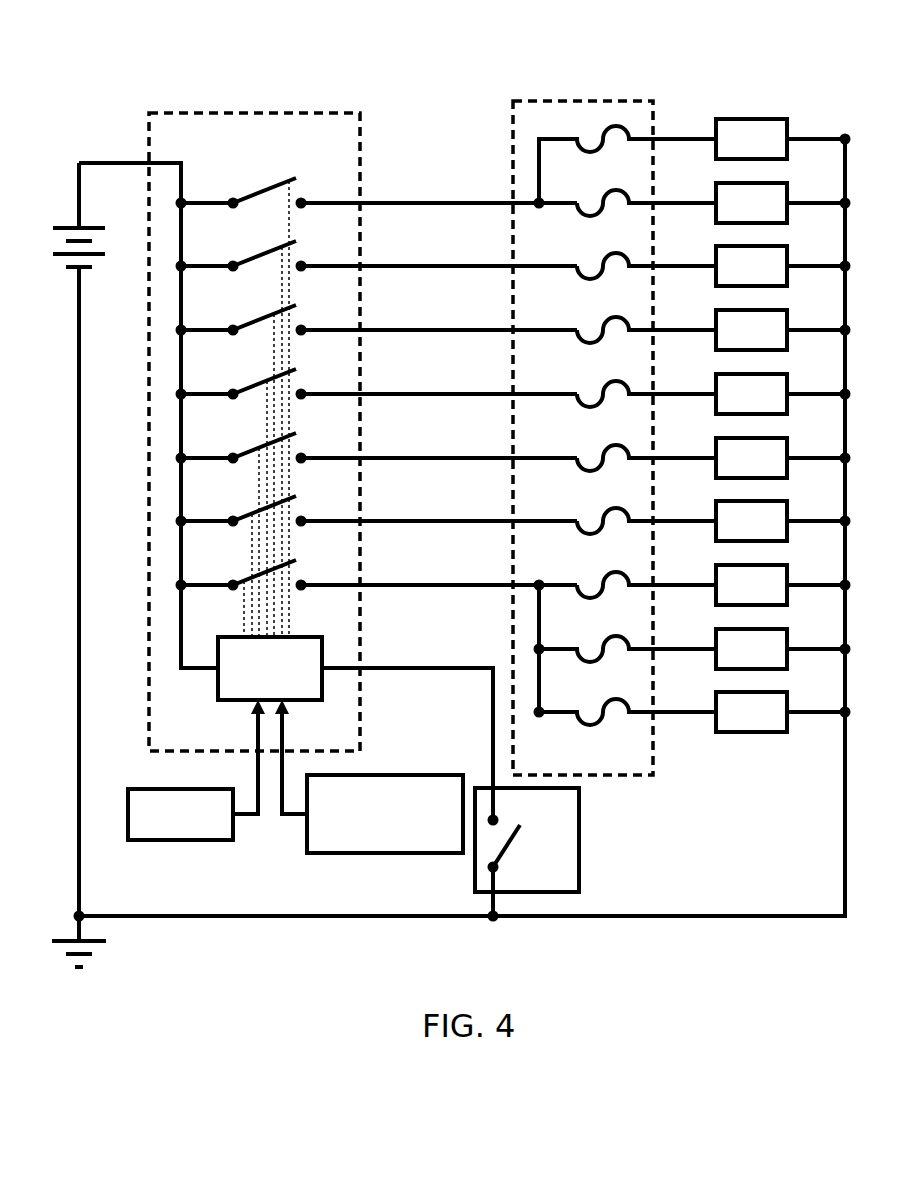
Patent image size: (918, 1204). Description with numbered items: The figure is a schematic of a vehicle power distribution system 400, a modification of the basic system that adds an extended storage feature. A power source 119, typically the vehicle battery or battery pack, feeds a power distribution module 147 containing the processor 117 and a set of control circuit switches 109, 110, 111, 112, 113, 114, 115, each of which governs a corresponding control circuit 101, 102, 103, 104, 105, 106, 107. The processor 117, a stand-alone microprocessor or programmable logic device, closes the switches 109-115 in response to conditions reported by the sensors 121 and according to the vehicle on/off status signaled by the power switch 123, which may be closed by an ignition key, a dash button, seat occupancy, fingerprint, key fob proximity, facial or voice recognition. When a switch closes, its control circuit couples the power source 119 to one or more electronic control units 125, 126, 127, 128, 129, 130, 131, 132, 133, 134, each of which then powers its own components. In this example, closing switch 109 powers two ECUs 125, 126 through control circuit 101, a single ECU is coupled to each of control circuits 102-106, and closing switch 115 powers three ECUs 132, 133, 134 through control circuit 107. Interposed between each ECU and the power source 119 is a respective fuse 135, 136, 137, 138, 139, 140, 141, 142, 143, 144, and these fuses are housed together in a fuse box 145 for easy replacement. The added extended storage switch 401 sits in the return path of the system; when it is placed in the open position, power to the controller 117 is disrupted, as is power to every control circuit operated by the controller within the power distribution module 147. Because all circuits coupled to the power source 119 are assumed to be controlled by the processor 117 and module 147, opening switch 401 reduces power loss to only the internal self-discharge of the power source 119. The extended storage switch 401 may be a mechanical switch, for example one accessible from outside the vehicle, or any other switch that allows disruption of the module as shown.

The vehicle power distribution system with extended storage feature 400 is at (0, 0).
The control circuit 101 is at (439, 187).
The control circuit 102 is at (439, 250).
The control circuit 103 is at (439, 314).
The control circuit 104 is at (439, 378).
The control circuit 105 is at (439, 442).
The control circuit 106 is at (439, 505).
The control circuit 107 is at (439, 569).
The control circuit switch 109 is at (280, 184).
The control circuit switch 110 is at (273, 250).
The control circuit switch 111 is at (265, 317).
The control circuit switch 112 is at (255, 385).
The control circuit switch 113 is at (247, 453).
The control circuit switch 114 is at (249, 515).
The control circuit switch 115 is at (249, 579).
The processor 117 is at (242, 703).
The power source 119 is at (58, 539).
The sensors 121 is at (181, 843).
The power switch 123 is at (360, 855).
The electronic control unit 125 is at (766, 120).
The electronic control unit 126 is at (766, 184).
The electronic control unit 127 is at (766, 247).
The electronic control unit 128 is at (766, 311).
The electronic control unit 129 is at (766, 375).
The electronic control unit 130 is at (766, 439).
The electronic control unit 131 is at (766, 502).
The electronic control unit 132 is at (766, 566).
The electronic control unit 133 is at (766, 630).
The electronic control unit 134 is at (766, 693).
The fuse 135 is at (619, 158).
The fuse 136 is at (629, 187).
The fuse 137 is at (621, 253).
The fuse 138 is at (621, 317).
The fuse 139 is at (621, 381).
The fuse 140 is at (621, 445).
The fuse 141 is at (621, 508).
The fuse 142 is at (621, 573).
The fuse 143 is at (625, 623).
The fuse 144 is at (625, 687).
The fuse box 145 is at (599, 418).
The power distribution module 147 is at (321, 433).
The extended storage switch 401 is at (581, 877).